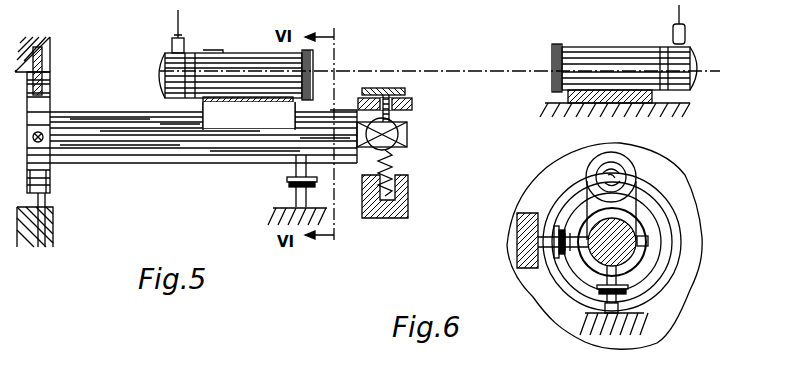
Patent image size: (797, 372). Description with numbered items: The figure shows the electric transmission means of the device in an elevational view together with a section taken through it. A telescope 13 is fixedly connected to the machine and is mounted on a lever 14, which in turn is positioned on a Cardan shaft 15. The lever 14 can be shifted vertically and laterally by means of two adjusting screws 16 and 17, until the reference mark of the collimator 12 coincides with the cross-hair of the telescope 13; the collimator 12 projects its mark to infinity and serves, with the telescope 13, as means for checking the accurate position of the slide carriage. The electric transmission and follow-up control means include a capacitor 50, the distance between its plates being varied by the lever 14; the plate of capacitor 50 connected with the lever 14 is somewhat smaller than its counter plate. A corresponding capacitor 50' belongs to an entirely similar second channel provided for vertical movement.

In FIG. 6, the collimator 12 is at (576, 48).
In FIG. 5, the telescope 13 is at (244, 66).
In FIG. 6, the telescope 13 is at (628, 174).
In FIG. 5, the lever 14 is at (148, 165).
In FIG. 6, the lever 14 is at (629, 226).
In FIG. 5, the Cardan shaft 15 is at (53, 167).
In FIG. 5, the adjusting screw 16 is at (386, 88).
In FIG. 5, the adjusting screw 17 is at (408, 130).
In FIG. 5, the capacitor 50 is at (272, 190).
In FIG. 6, the capacitor 50 is at (656, 314).
In FIG. 6, the capacitor 50' is at (568, 276).